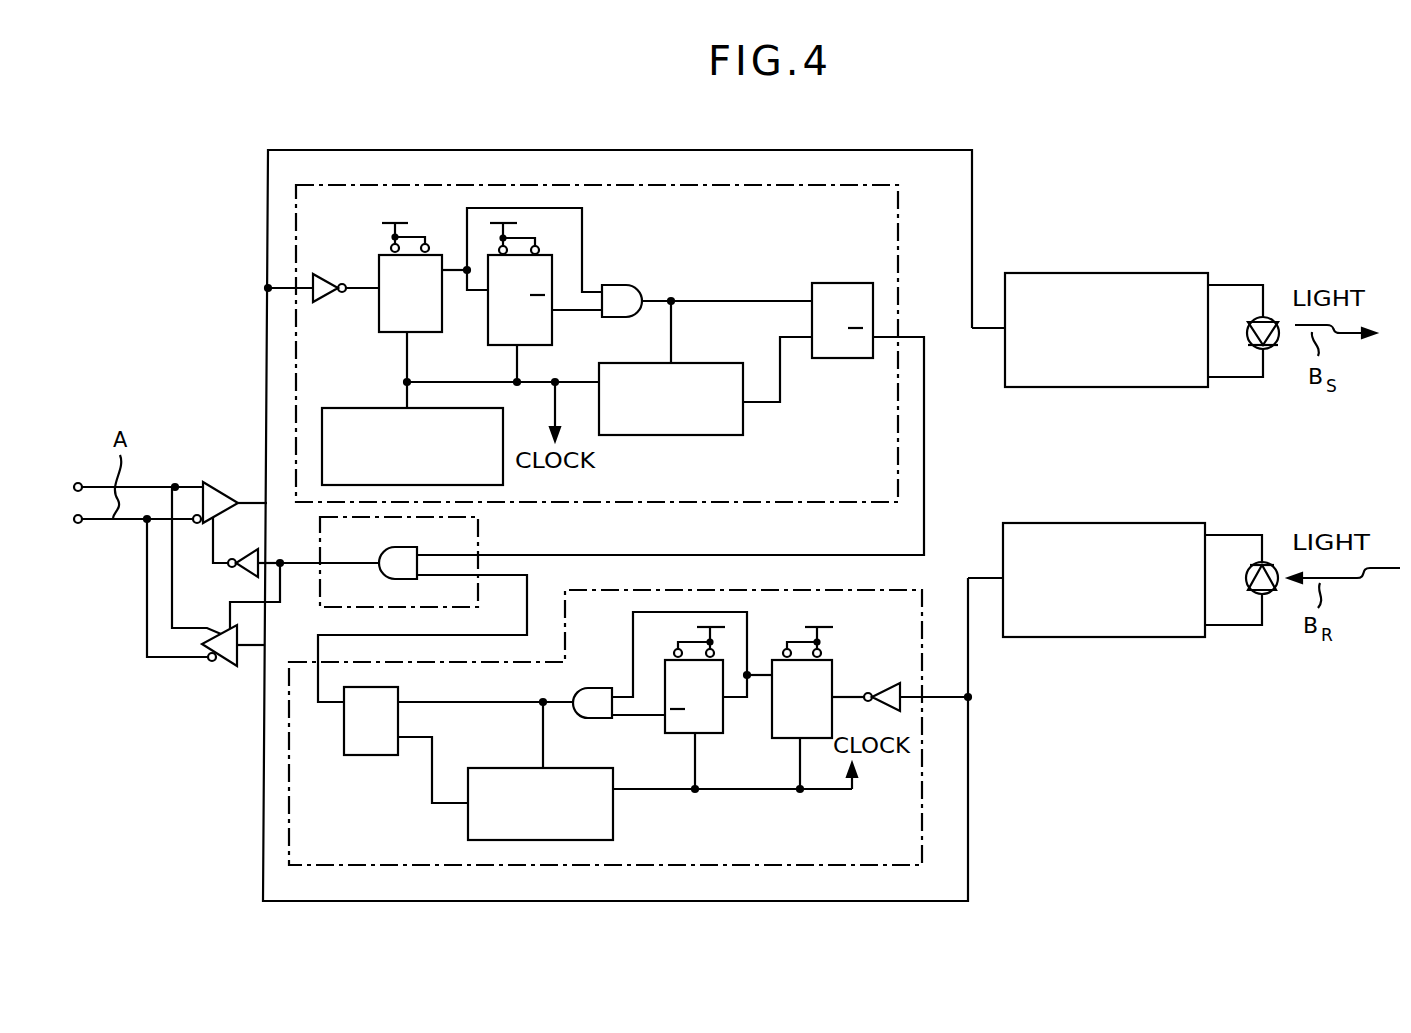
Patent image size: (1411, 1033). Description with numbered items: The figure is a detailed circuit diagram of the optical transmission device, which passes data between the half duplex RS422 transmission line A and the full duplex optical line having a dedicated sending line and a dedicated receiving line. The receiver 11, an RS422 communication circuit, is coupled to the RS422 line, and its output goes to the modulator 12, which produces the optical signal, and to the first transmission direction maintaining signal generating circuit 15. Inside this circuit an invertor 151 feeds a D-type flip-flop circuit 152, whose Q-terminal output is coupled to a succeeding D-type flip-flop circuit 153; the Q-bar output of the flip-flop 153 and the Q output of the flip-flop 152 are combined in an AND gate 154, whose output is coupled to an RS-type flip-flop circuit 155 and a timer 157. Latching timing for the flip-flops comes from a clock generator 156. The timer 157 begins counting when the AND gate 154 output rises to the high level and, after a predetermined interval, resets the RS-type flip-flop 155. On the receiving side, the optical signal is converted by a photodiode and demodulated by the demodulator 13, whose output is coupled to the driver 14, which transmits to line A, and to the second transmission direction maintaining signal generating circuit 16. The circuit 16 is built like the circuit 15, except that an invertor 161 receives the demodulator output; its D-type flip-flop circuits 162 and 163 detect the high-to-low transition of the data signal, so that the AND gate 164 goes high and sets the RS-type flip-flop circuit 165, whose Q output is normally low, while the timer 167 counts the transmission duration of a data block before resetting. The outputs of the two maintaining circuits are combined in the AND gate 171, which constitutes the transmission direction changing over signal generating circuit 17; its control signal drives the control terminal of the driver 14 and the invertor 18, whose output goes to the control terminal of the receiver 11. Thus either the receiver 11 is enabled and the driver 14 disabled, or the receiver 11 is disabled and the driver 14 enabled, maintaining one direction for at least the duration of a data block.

The receiver 11 is at (220, 484).
The modulator 12 is at (1008, 272).
The demodulator 13 is at (1008, 522).
The driver 14 is at (222, 668).
The first transmission direction maintaining signal generating circuit 15 is at (898, 186).
The second transmission direction maintaining signal generating circuit 16 is at (922, 590).
The transmission direction changing over signal generating circuit 17 is at (478, 518).
The invertor 18 is at (252, 549).
The invertor 151 is at (322, 278).
The D-type flip-flop circuit 152 is at (378, 253).
The D-type flip-flop circuit 153 is at (549, 255).
The AND gate 154 is at (622, 285).
The RS-type flip-flop circuit 155 is at (823, 283).
The clock generator 156 is at (325, 408).
The timer 157 is at (600, 363).
The invertor 161 is at (900, 683).
The D-type flip-flop circuit 162 is at (834, 664).
The D-type flip-flop circuit 163 is at (666, 660).
The AND gate 164 is at (594, 688).
The RS-type flip-flop circuit 165 is at (398, 690).
The timer 167 is at (470, 768).
The AND gate 171 is at (378, 551).